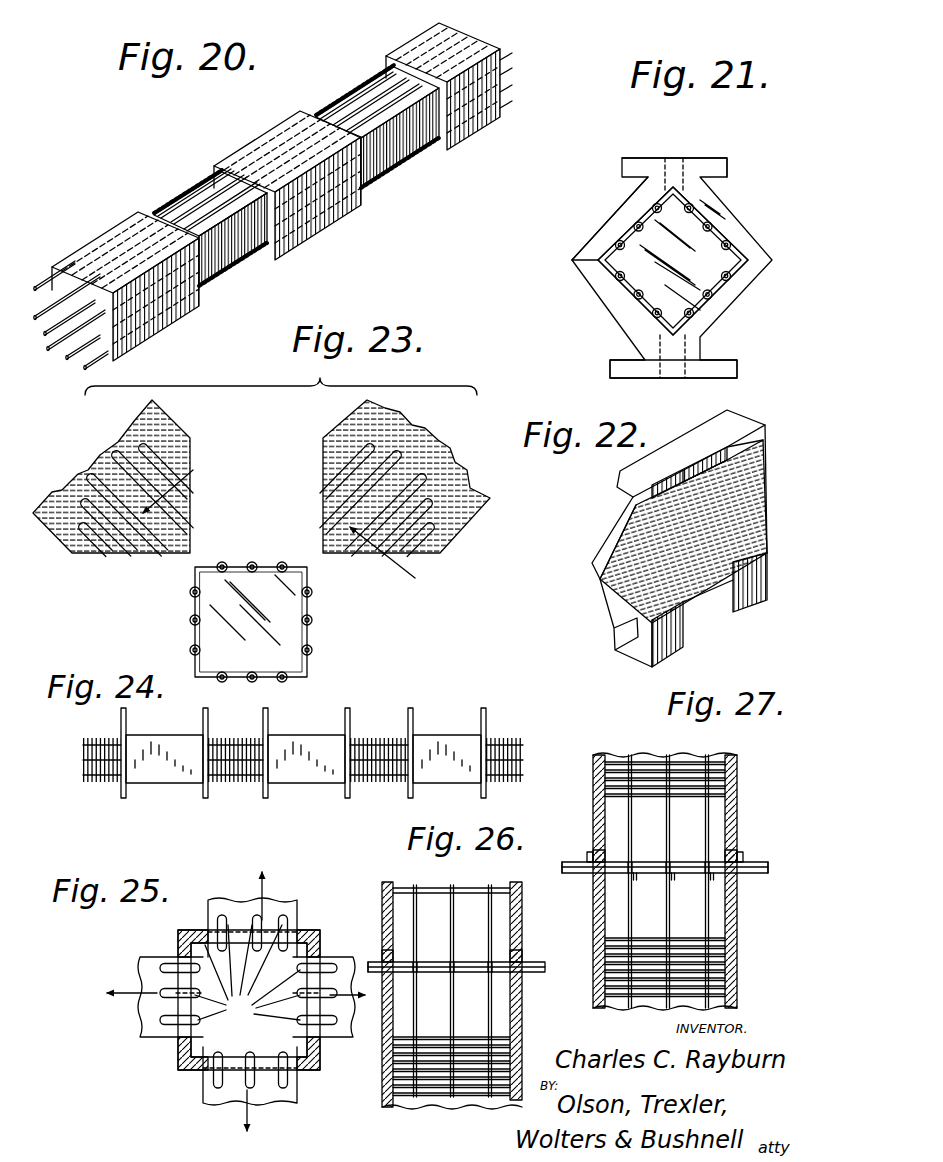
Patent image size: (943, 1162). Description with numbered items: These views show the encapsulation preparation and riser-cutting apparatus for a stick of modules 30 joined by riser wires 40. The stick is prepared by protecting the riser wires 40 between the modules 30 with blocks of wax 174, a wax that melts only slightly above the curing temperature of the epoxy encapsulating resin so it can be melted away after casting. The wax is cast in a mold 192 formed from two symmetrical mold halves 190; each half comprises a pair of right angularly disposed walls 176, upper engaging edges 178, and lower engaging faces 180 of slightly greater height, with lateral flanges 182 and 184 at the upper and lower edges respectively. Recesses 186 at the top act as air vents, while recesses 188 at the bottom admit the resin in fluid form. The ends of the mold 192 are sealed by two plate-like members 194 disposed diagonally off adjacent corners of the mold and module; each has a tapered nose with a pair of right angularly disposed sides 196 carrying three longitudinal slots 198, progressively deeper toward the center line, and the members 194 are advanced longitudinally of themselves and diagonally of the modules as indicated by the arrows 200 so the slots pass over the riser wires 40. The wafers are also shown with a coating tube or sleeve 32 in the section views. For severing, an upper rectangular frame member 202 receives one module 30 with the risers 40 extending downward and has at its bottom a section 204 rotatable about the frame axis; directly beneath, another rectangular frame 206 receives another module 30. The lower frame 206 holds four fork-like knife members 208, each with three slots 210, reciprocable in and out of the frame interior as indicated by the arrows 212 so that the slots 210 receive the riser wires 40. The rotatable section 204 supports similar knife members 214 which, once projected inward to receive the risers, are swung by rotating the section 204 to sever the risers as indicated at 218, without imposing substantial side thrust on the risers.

In FIG. 20, the module 30 is at (157, 198).
In FIG. 21, the module 30 is at (712, 215).
In FIG. 23, the module 30 is at (312, 606).
In FIG. 24, the module 30 is at (376, 728).
In FIG. 26, the module 30 is at (505, 900).
In FIG. 27, the module 30 is at (720, 784).
In FIG. 20, the insulating tube 32 is at (205, 195).
In FIG. 21, the insulating tube 32 is at (706, 240).
In FIG. 23, the insulating tube 32 is at (290, 633).
In FIG. 20, the riser wires 40 is at (182, 206).
In FIG. 21, the riser wires 40 is at (731, 250).
In FIG. 23, the riser wires 40 is at (288, 676).
In FIG. 25, the riser wires 40 is at (247, 972).
In FIG. 26, the riser wires 40 is at (450, 938).
In FIG. 27, the riser wires 40 is at (707, 838).
In FIG. 20, the blocks of wax 174 is at (320, 228).
In FIG. 21, the right angularly disposed walls 176 is at (612, 229).
In FIG. 22, the right angularly disposed walls 176 is at (615, 527).
In FIG. 22, the upper engaging edges 178 is at (760, 432).
In FIG. 22, the lower engaging faces 180 is at (752, 572).
In FIG. 21, the upper lateral flange 182 is at (633, 168).
In FIG. 22, the upper lateral flange 182 is at (618, 474).
In FIG. 21, the lower lateral flange 184 is at (615, 360).
In FIG. 22, the lower lateral flange 184 is at (612, 634).
In FIG. 21, the top recesses 186 is at (680, 152).
In FIG. 22, the top recesses 186 is at (703, 455).
In FIG. 21, the bottom recesses 188 is at (700, 341).
In FIG. 22, the bottom recesses 188 is at (700, 625).
In FIG. 21, the mold halves 190 is at (598, 294).
In FIG. 22, the mold halves 190 is at (742, 480).
In FIG. 21, the mold 192 is at (618, 194).
In FIG. 24, the mold 192 is at (452, 728).
In FIG. 23, the plate-like members 194 is at (155, 426).
In FIG. 24, the plate-like members 194 is at (203, 718).
In FIG. 23, the right angularly disposed sides 196 is at (190, 510).
In FIG. 23, the longitudinal slots 198 is at (400, 458).
In FIG. 23, the arrows 200 is at (296, 521).
In FIG. 25, the upper rectangular frame member 202 is at (249, 1000).
In FIG. 26, the upper rectangular frame member 202 is at (385, 897).
In FIG. 27, the upper rectangular frame member 202 is at (738, 800).
In FIG. 25, the rotatable frame section 204 is at (180, 946).
In FIG. 26, the rotatable frame section 204 is at (384, 957).
In FIG. 27, the rotatable frame section 204 is at (742, 858).
In FIG. 26, the lower rectangular frame 206 is at (523, 1013).
In FIG. 27, the lower rectangular frame 206 is at (738, 948).
In FIG. 25, the knife members 208 is at (272, 912).
In FIG. 26, the knife members 208 is at (541, 975).
In FIG. 27, the knife members 208 is at (752, 876).
In FIG. 25, the slots 210 is at (240, 905).
In FIG. 26, the slots 210 is at (455, 975).
In FIG. 25, the arrows 212 is at (130, 1000).
In FIG. 26, the knife members 214 is at (470, 958).
In FIG. 27, the knife members 214 is at (752, 862).
In FIG. 27, the severed risers 218 is at (712, 882).